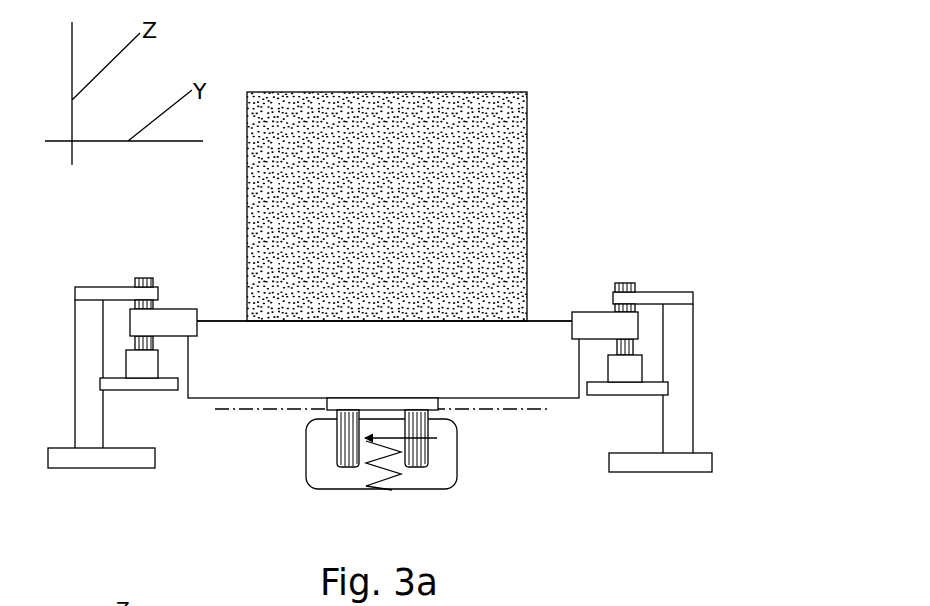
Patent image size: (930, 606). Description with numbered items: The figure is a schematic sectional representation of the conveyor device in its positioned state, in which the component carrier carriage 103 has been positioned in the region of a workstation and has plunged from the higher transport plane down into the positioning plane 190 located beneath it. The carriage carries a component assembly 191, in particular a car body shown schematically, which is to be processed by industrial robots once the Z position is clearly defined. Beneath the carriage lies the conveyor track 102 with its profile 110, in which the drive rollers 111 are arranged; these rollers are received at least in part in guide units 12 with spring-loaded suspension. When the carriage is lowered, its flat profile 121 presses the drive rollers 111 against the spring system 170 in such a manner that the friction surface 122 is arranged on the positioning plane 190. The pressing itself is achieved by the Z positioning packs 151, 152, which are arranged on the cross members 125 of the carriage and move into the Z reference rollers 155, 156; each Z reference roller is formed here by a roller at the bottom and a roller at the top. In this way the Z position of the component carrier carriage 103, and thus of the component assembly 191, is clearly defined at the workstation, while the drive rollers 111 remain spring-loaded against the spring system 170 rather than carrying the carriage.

The component assembly 191 is at (527, 135).
The component carrier carriage 103 is at (223, 252).
The cross members 125 is at (220, 327).
The Z reference roller 156 is at (147, 278).
The Z positioning pack 152 is at (150, 325).
The Z reference roller 155 is at (628, 283).
The Z positioning pack 151 is at (592, 318).
The positioning plane 190 is at (222, 415).
The flat profile 121 is at (392, 405).
The conveyor track 102 is at (460, 429).
The drive rollers 111 is at (342, 446).
The friction surface 122 is at (330, 413).
The profile 110 is at (456, 440).
The guide units 12 is at (352, 475).
The spring system 170 is at (400, 478).